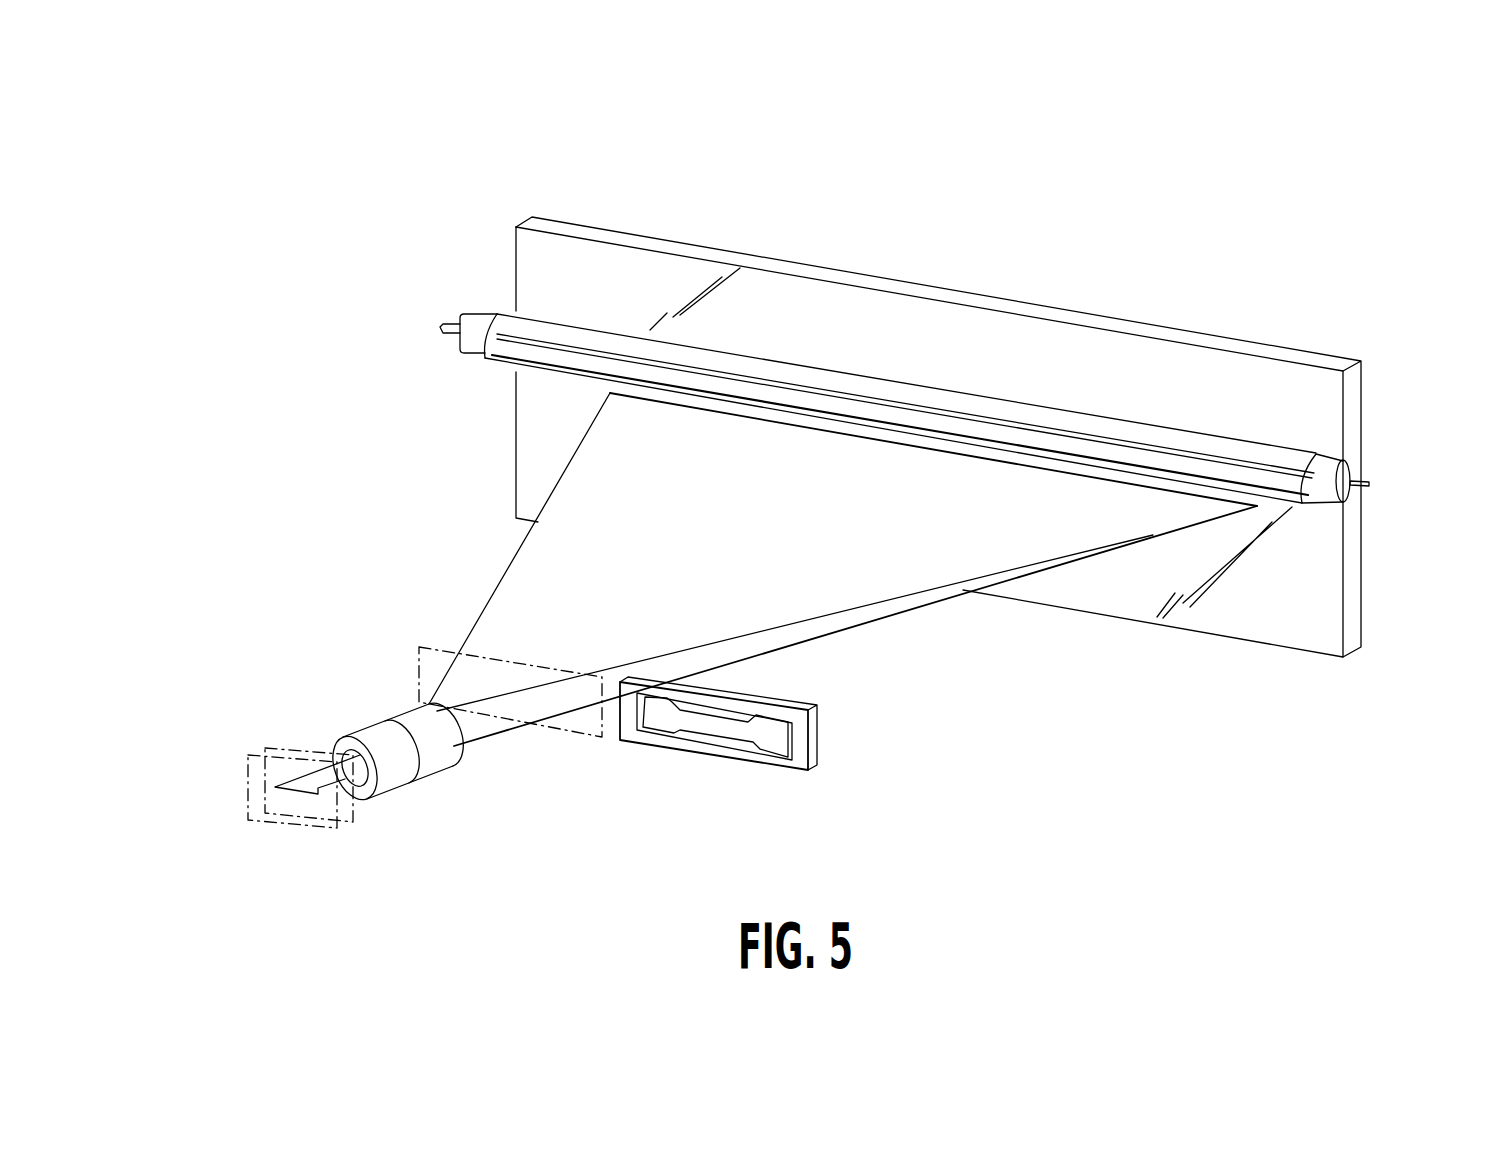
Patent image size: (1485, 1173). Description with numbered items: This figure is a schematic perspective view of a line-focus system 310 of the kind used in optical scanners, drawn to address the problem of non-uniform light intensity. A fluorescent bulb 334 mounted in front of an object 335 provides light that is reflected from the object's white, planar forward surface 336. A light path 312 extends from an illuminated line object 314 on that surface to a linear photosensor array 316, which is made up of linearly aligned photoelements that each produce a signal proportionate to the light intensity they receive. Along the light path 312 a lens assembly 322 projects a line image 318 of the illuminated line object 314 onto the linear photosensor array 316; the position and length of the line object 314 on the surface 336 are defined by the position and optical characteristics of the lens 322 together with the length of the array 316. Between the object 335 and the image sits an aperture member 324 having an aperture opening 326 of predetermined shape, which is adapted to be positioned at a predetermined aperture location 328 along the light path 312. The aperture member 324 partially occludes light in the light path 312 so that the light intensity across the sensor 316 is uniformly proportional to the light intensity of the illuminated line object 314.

The line-focus system 310 is at (508, 210).
The light path 312 is at (786, 548).
The illuminated line object 314 is at (1002, 462).
The linear photosensor array 316 is at (289, 790).
The line image 318 is at (316, 790).
The lens assembly 322 is at (368, 720).
The aperture member 324 is at (817, 742).
The aperture opening 326 is at (780, 735).
The aperture location 328 is at (452, 648).
The fluorescent bulb 334 is at (504, 368).
The object 335 is at (1355, 590).
The forward surface 336 is at (1286, 370).